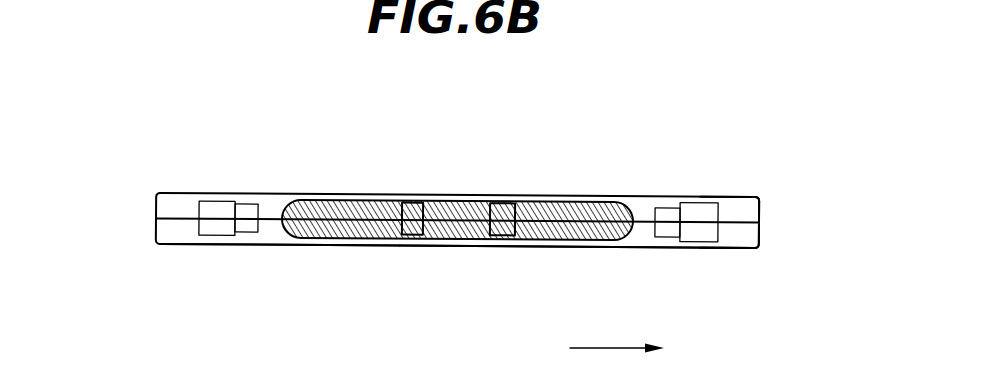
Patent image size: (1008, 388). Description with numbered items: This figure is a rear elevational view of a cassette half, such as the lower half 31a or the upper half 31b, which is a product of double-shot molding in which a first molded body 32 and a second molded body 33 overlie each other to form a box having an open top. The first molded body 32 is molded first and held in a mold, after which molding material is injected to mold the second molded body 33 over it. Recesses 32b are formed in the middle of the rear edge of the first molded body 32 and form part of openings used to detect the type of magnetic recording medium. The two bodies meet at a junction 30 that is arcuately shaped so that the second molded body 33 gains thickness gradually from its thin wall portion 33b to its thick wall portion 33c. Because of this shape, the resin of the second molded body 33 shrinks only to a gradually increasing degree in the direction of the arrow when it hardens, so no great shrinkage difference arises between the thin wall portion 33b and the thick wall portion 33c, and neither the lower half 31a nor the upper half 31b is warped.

The junction 30 is at (282, 200).
The lower half 31a is at (762, 237).
The upper half 31b is at (760, 207).
The first molded body 32 is at (608, 202).
The recesses 32b is at (490, 236).
The second molded body 33 is at (167, 208).
The thin wall portion 33b is at (565, 243).
The thick wall portion 33c is at (278, 232).